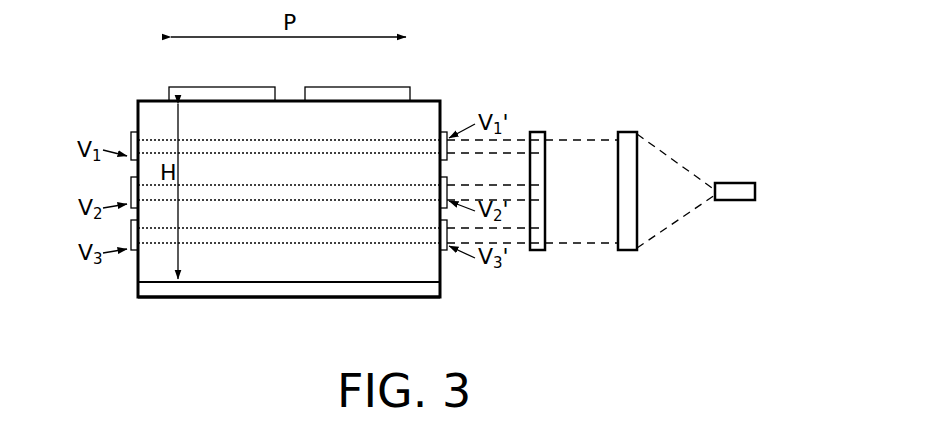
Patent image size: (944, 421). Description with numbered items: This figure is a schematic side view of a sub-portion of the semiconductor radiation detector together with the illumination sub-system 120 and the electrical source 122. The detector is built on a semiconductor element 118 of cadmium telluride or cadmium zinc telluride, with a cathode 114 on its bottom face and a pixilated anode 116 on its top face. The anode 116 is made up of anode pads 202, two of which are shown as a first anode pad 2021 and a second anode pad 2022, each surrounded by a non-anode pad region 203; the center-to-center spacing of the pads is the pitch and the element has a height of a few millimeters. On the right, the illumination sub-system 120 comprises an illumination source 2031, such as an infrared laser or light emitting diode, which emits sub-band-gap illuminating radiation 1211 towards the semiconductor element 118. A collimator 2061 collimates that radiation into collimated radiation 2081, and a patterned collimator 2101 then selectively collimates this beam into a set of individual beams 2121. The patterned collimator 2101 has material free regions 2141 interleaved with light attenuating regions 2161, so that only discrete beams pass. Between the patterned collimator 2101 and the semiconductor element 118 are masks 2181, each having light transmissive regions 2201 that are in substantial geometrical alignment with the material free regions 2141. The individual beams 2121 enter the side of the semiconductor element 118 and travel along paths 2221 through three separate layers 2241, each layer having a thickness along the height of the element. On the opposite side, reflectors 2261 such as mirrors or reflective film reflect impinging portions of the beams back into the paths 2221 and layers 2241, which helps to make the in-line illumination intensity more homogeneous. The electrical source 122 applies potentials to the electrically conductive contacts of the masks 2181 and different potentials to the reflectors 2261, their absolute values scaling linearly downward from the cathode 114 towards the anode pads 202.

The anode 116 is at (147, 61).
The semiconductor element 118 is at (138, 272).
The cathode 114 is at (148, 297).
The electrical source 122 is at (47, 287).
The non-anode pad region 203 is at (151, 99).
The anode pad 202 is at (421, 49).
The anode pad 2021 is at (222, 87).
The anode pad 2022 is at (376, 87).
The reflector 2261 is at (131, 135).
The mask 2181 is at (444, 133).
The path 2221 is at (265, 140).
The layer 2241 is at (344, 139).
The light transmissive region 2201 is at (440, 150).
The material free region 2141 is at (538, 145).
The light attenuating region 2161 is at (540, 160).
The patterned collimator 2101 is at (537, 132).
The individual beam 2121 is at (519, 104).
The collimated radiation 2081 is at (618, 132).
The collimator 2061 is at (627, 250).
The sub-band-gap illuminating radiation 1211 is at (668, 152).
The illumination source 2031 is at (735, 200).
The illumination sub-system 120 is at (706, 77).